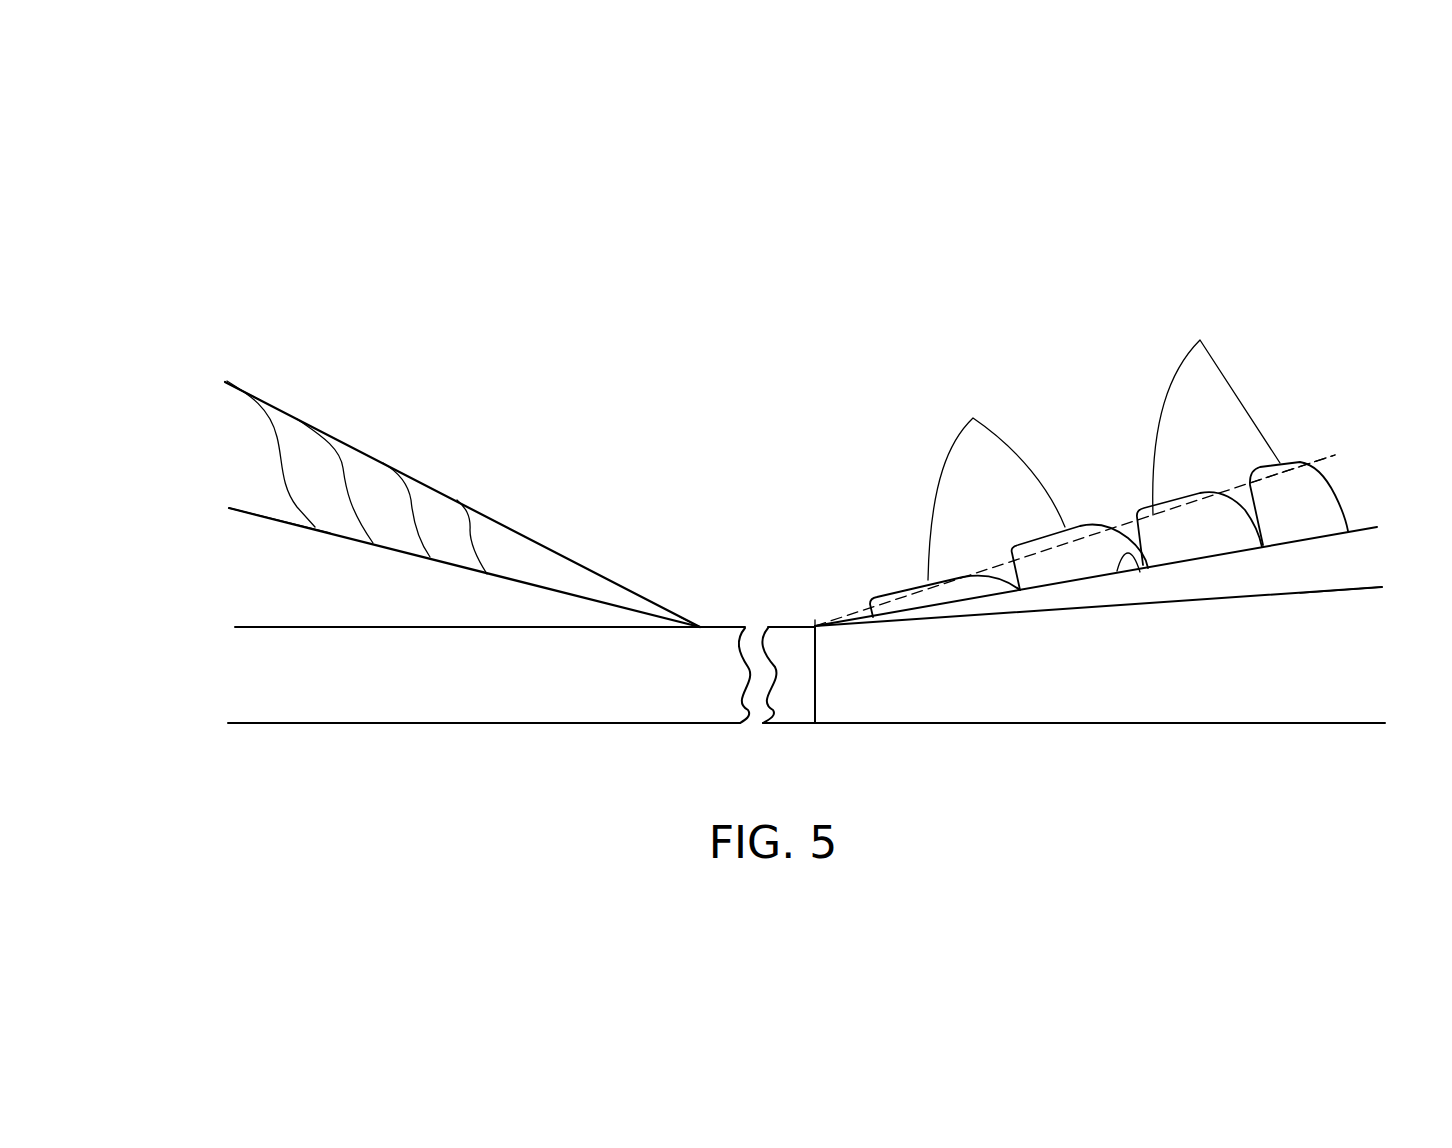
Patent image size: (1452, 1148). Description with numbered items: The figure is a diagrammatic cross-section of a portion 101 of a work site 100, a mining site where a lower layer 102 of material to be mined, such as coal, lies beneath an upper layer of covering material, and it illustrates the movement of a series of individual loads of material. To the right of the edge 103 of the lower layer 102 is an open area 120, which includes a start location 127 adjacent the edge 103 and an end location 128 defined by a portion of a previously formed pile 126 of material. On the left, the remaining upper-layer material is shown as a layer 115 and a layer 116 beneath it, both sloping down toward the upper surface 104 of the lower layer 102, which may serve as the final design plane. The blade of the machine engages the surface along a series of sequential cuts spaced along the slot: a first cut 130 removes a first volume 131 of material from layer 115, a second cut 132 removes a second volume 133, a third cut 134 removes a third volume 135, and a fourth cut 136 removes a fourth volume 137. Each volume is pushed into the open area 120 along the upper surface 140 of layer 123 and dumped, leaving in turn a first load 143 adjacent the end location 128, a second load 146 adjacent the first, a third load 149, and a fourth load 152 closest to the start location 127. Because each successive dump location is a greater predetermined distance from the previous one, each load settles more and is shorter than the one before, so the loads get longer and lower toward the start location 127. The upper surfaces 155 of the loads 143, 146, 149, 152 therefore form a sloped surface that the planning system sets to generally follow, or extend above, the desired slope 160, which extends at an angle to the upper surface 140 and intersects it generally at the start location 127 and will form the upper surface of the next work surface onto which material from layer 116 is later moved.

The work site 100 is at (747, 292).
The portion of the work site 101 is at (676, 365).
The lower layer 102 is at (393, 681).
The edge of the lower layer 103 is at (817, 668).
The upper surface of the lower layer 104 is at (718, 627).
The layer of the upper layer 115 is at (245, 455).
The layer of the upper layer 116 is at (293, 570).
The open area 120 is at (927, 297).
The layer of the pile 123 is at (1363, 560).
The pile of material 126 is at (1011, 360).
The start location 127 is at (816, 605).
The end location 128 is at (1343, 358).
The first cut 130 is at (473, 523).
The first volume of material 131 is at (550, 567).
The second cut 132 is at (420, 478).
The second volume of material 133 is at (433, 520).
The third cut 134 is at (340, 447).
The third volume of material 135 is at (368, 482).
The fourth cut 136 is at (268, 410).
The fourth volume of material 137 is at (298, 453).
The upper surface of layer 123 140 is at (1140, 572).
The first load of material 143 is at (1275, 523).
The second load of material 146 is at (1175, 543).
The third load of material 149 is at (1057, 573).
The fourth load of material 152 is at (955, 593).
The upper surface of the loads 155 is at (1104, 443).
The desired slope 160 is at (1320, 460).